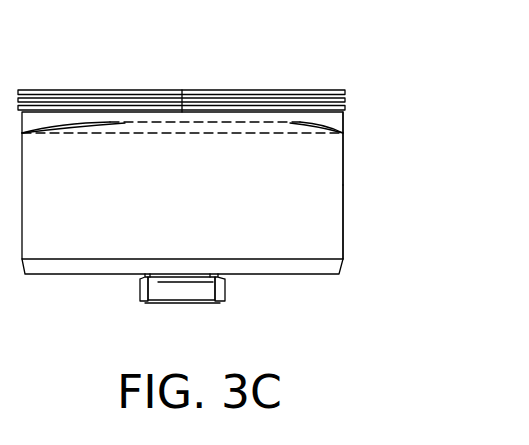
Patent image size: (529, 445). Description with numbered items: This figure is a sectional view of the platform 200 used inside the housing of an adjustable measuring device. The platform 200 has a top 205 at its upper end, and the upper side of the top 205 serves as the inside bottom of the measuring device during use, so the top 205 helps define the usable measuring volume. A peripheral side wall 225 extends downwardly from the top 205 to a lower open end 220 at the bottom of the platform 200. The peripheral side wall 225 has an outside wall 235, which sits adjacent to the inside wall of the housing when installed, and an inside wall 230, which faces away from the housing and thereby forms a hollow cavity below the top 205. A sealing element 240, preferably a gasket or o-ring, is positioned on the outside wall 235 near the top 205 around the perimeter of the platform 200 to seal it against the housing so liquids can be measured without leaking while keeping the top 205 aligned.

The platform 200 is at (304, 85).
The top 205 is at (154, 88).
The lower open end 220 is at (263, 275).
The peripheral side wall 225 is at (343, 156).
The inside wall 230 is at (338, 189).
The outside wall 235 is at (343, 239).
The sealing element 240 is at (346, 109).